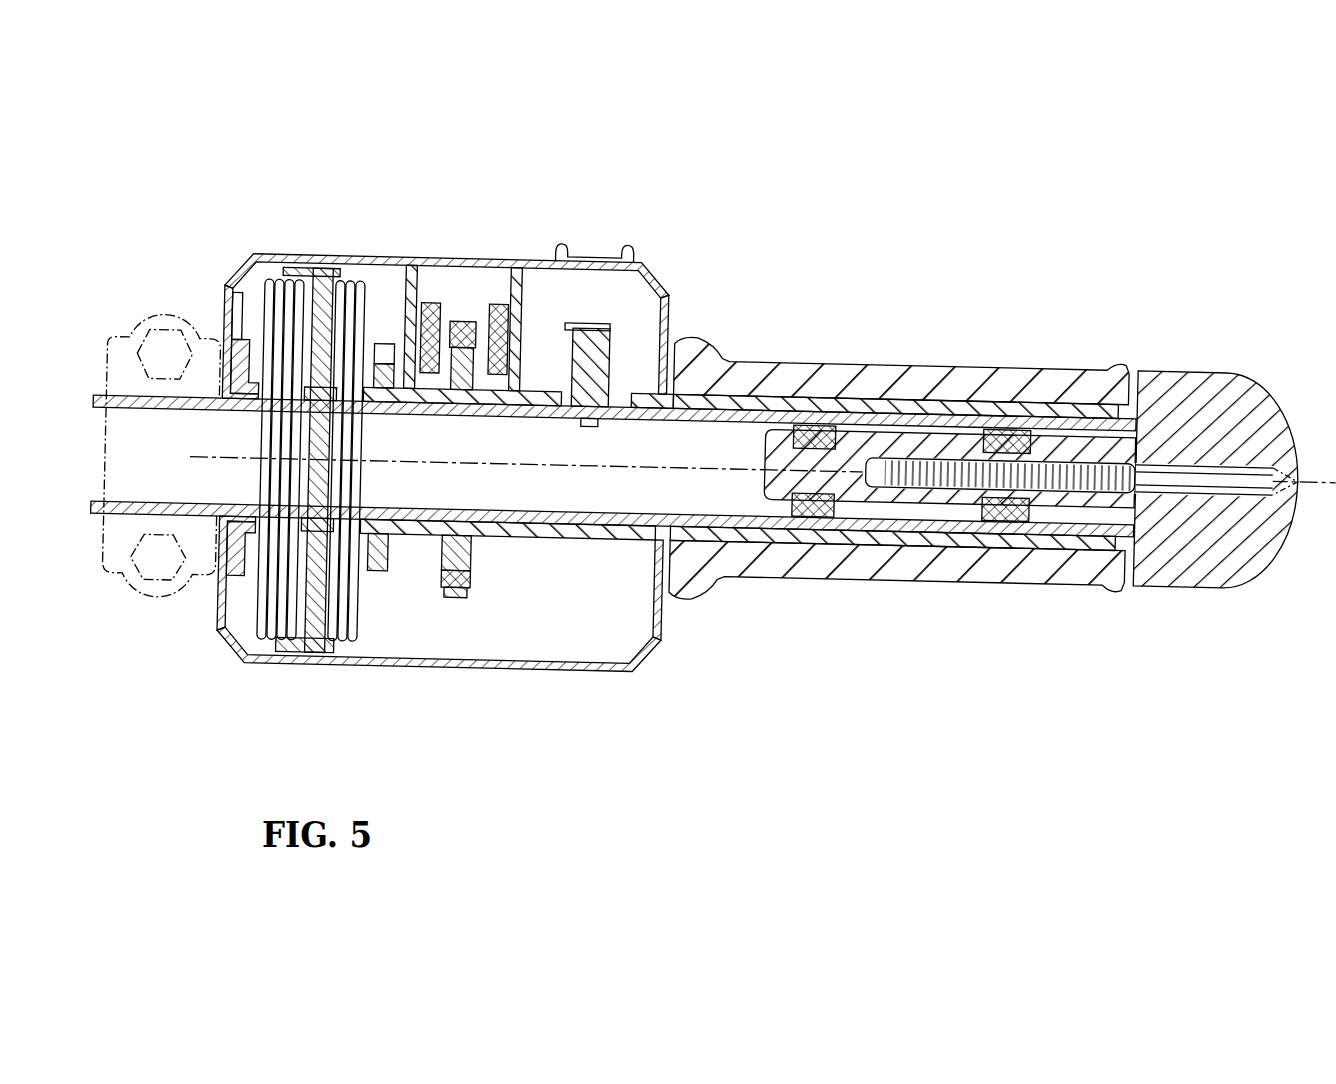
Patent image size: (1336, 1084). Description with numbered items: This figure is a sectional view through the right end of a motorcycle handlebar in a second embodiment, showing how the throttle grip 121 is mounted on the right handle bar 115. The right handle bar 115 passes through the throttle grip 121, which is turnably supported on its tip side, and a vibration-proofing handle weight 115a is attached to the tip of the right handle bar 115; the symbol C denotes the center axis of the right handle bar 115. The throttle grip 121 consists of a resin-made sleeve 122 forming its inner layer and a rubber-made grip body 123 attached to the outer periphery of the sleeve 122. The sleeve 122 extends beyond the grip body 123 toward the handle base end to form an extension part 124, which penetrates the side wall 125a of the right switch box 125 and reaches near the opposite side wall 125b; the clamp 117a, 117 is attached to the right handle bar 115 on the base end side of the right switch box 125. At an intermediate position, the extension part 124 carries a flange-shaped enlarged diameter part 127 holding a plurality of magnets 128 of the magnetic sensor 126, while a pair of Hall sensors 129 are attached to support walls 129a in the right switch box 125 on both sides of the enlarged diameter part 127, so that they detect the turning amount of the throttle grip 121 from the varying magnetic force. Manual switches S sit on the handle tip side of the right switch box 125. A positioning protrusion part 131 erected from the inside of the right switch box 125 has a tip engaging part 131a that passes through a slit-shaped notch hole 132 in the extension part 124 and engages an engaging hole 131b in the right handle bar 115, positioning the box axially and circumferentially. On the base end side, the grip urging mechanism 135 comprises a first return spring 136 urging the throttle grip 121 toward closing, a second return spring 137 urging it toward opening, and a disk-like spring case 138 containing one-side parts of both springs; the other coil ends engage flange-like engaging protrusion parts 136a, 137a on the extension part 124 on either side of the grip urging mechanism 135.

The right handle bar 115 is at (1034, 384).
The vibration-proofing handle weight 115a is at (1226, 354).
The clamp 117 is at (138, 429).
The clamp 117a is at (101, 338).
The throttle grip 121 is at (900, 429).
The sleeve 122 is at (916, 372).
The grip body 123 is at (883, 357).
The extension part 124 is at (540, 390).
The right switch box 125 is at (454, 435).
The side wall 125a is at (668, 317).
The side wall 125b is at (221, 333).
The magnetic sensor 126 is at (454, 424).
The enlarged diameter part 127 is at (475, 545).
The magnets 128 is at (458, 309).
The Hall sensors 129 is at (421, 296).
The support walls 129a is at (401, 295).
The positioning protrusion part 131 is at (616, 351).
The tip engaging part 131a is at (585, 414).
The engaging hole 131b is at (580, 441).
The notch hole 132 is at (622, 398).
The grip urging mechanism 135 is at (305, 405).
The first return spring 136 is at (212, 386).
The engaging protrusion part 136a is at (241, 333).
The second return spring 137 is at (346, 274).
The engaging protrusion part 137a is at (381, 340).
The spring case 138 is at (316, 265).
The manual switches S is at (596, 244).
The center axis C is at (1309, 446).